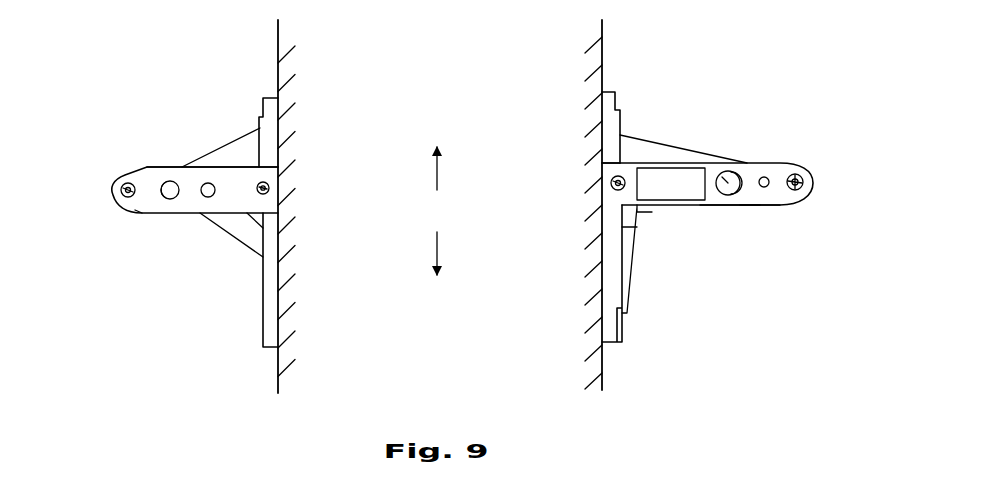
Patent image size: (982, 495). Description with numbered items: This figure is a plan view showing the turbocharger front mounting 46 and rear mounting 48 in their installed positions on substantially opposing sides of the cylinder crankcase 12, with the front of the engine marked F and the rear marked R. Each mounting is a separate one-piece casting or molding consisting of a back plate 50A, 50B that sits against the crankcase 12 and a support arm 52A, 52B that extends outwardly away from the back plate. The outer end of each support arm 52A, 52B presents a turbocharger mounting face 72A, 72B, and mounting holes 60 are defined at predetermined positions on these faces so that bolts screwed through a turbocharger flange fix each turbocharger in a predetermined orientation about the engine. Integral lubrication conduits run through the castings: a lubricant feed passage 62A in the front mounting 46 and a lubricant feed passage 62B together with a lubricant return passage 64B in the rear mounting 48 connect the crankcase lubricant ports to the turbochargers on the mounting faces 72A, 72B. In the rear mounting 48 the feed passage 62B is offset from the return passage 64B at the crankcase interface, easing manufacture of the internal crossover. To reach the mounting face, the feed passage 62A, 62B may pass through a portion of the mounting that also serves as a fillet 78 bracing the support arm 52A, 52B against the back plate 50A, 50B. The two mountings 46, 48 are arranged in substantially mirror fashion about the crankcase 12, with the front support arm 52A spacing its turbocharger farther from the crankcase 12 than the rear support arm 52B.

The cylinder crankcase 12 is at (507, 223).
The turbocharger front mounting 46 is at (720, 240).
The turbocharger rear mounting 48 is at (178, 135).
The back plate 50A is at (632, 137).
The back plate 50B is at (267, 126).
The support arm 52A is at (745, 208).
The support arm 52B is at (127, 213).
The mounting holes 60 is at (118, 193).
The lubricant feed passage 62A is at (765, 178).
The lubricant feed passage 62B is at (208, 197).
The lubricant return passage 64B is at (173, 185).
The turbocharger mounting face 72A is at (748, 172).
The turbocharger mounting face 72B is at (148, 193).
The fillet 78 is at (238, 148).